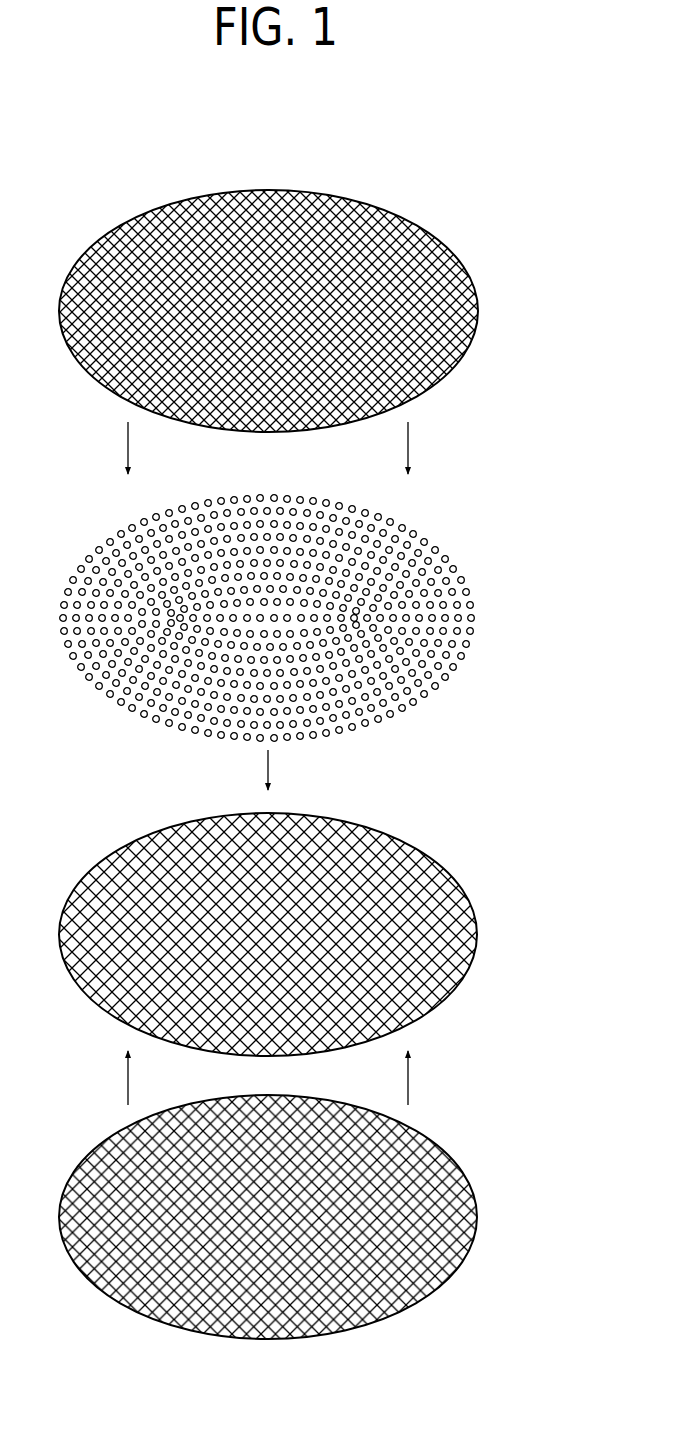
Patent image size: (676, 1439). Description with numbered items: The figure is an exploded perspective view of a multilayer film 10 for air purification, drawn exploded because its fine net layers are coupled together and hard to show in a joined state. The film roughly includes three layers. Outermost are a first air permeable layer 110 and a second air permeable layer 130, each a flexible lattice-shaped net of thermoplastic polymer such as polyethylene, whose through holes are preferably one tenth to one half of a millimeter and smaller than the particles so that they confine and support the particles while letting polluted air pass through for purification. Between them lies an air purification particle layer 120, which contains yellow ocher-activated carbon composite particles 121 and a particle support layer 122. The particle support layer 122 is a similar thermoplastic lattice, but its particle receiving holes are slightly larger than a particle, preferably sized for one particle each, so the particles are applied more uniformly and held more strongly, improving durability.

The multilayer film 10 is at (462, 165).
The first air permeable layer 110 is at (479, 308).
The air purification particle layer 120 is at (334, 777).
The yellow ocher-activated carbon composite particles 121 is at (473, 614).
The particle support layer 122 is at (306, 934).
The second air permeable layer 130 is at (478, 1215).